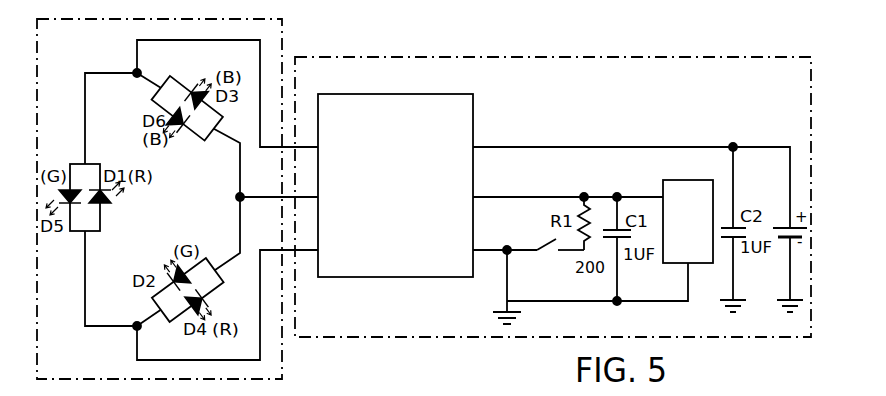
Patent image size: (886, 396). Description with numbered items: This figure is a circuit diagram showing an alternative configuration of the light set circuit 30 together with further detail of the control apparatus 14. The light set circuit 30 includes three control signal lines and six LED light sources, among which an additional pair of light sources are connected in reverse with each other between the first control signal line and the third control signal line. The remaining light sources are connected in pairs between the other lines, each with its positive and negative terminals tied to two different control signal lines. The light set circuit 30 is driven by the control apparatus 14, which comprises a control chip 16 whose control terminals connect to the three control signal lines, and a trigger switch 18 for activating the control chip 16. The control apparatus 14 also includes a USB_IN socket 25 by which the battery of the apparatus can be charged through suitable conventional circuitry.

The control apparatus 14 is at (397, 338).
The control chip 16 is at (408, 177).
The trigger switch 18 is at (545, 242).
The USB_IN socket 25 is at (653, 177).
The light set circuit 30 is at (283, 350).